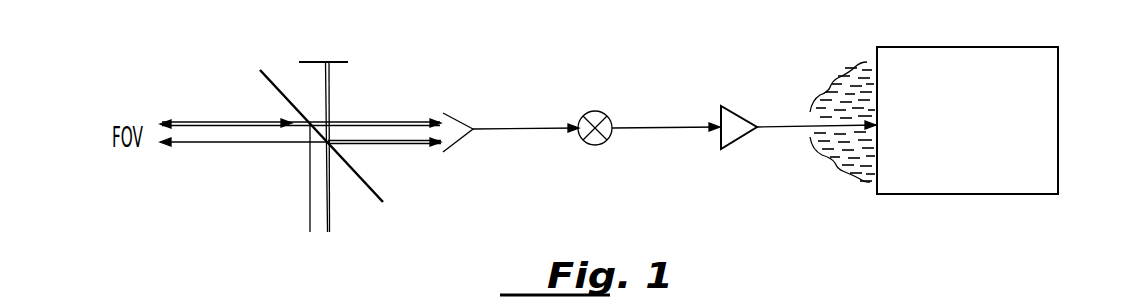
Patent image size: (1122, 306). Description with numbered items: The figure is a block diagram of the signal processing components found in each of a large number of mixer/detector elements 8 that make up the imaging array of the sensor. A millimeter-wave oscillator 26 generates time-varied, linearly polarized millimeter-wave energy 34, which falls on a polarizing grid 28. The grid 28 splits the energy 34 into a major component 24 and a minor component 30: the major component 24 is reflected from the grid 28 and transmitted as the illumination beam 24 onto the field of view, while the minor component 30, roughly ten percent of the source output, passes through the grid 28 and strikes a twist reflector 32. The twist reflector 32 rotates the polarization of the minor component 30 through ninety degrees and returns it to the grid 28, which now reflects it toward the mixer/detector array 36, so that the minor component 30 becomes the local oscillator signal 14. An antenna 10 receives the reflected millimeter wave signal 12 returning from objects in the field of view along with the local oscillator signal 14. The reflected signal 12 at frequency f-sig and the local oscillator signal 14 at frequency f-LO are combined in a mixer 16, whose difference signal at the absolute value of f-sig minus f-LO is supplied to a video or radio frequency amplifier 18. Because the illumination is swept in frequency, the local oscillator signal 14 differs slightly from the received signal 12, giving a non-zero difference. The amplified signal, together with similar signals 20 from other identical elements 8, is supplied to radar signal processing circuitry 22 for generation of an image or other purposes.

The mixer/detector element 8 is at (563, 152).
The antenna 10 is at (467, 115).
The reflected millimeter wave signal 12 is at (208, 121).
The local oscillator signal 14 is at (402, 147).
The mixer 16 is at (588, 115).
The video or radio frequency amplifier 18 is at (735, 118).
The similar signals from other elements 20 is at (832, 83).
The radar signal processing circuitry 22 is at (1050, 140).
The illumination beam 24 is at (238, 140).
The millimeter-wave oscillator 26 is at (380, 248).
The polarizing grid 28 is at (262, 79).
The minor component 30 is at (325, 87).
The twist reflector 32 is at (338, 62).
The millimeter-wave energy 34 is at (316, 199).
The mixer/detector array 36 is at (346, 152).